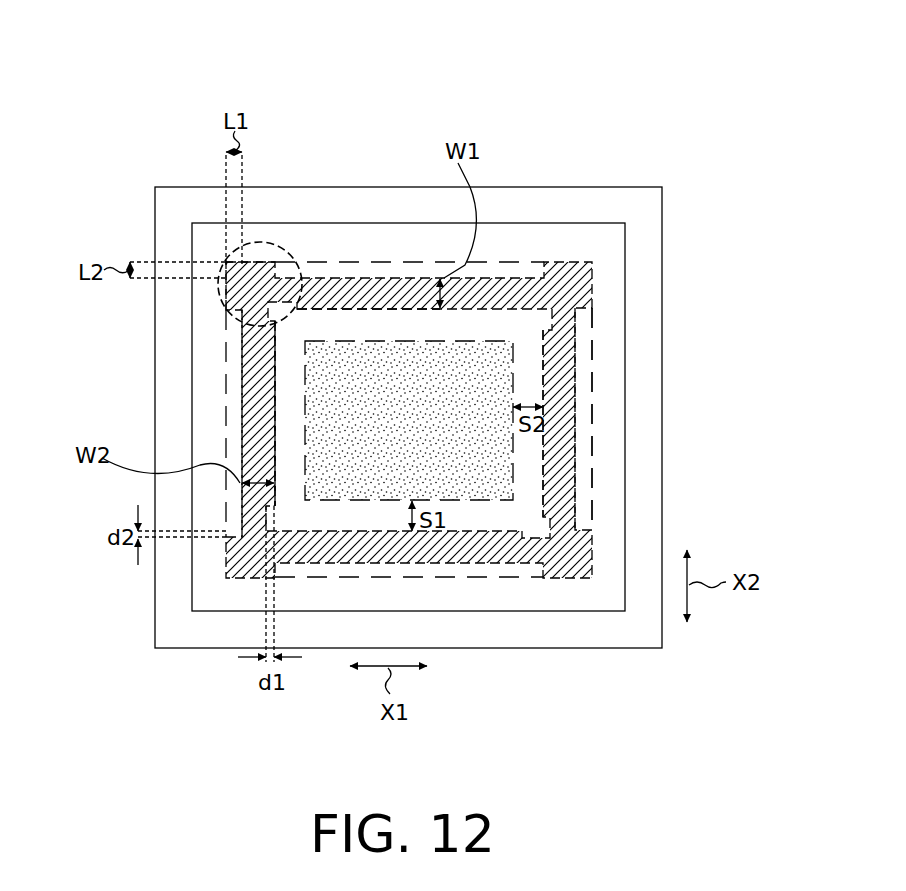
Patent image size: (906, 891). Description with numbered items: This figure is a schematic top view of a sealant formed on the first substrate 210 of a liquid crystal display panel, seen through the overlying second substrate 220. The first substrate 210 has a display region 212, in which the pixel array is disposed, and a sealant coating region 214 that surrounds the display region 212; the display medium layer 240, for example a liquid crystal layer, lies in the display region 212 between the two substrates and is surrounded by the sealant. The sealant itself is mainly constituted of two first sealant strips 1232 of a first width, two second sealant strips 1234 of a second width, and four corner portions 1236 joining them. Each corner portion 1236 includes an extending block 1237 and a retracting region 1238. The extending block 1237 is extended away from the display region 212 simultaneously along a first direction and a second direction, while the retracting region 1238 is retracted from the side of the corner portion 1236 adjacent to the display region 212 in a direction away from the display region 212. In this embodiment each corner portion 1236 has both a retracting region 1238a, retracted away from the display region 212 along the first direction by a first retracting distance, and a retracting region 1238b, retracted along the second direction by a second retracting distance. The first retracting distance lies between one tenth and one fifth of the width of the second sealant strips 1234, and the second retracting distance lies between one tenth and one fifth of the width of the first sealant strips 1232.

The first substrate 210 is at (662, 243).
The second substrate 220 is at (625, 507).
The display region 212 is at (548, 373).
The sealant coating region 214 is at (596, 320).
The display medium layer 240 is at (582, 450).
The first sealant strips 1232 is at (497, 463).
The second sealant strips 1234 is at (248, 405).
The corner portions 1236 is at (218, 293).
The extending block 1237 is at (290, 245).
The retracting region 1238 is at (480, 50).
The retracting region 1238a is at (271, 324).
The retracting region 1238b is at (293, 311).